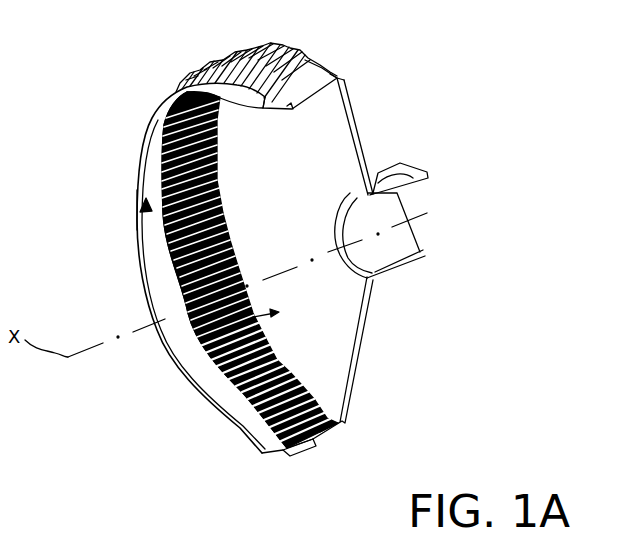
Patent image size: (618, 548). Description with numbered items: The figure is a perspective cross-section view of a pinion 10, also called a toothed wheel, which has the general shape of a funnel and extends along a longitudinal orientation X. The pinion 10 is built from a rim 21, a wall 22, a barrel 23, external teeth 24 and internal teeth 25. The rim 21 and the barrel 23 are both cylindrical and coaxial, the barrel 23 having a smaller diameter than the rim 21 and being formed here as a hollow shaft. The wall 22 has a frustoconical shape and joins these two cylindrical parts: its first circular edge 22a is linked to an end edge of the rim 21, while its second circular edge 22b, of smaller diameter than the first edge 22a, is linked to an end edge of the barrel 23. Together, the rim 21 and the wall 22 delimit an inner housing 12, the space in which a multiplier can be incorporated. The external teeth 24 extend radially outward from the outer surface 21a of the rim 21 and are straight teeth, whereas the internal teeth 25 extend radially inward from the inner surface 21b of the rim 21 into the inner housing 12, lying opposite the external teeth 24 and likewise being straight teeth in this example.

The pinion 10 is at (264, 265).
The inner housing 12 is at (213, 371).
The rim 21 is at (228, 426).
The outer surface of the rim 21a is at (336, 72).
The inner surface of the rim 21b is at (146, 205).
The wall 22 is at (362, 331).
The first circular edge 22a is at (350, 79).
The second circular edge 22b is at (380, 173).
The barrel 23 is at (405, 268).
The external teeth 24 is at (290, 457).
The internal teeth 25 is at (300, 400).